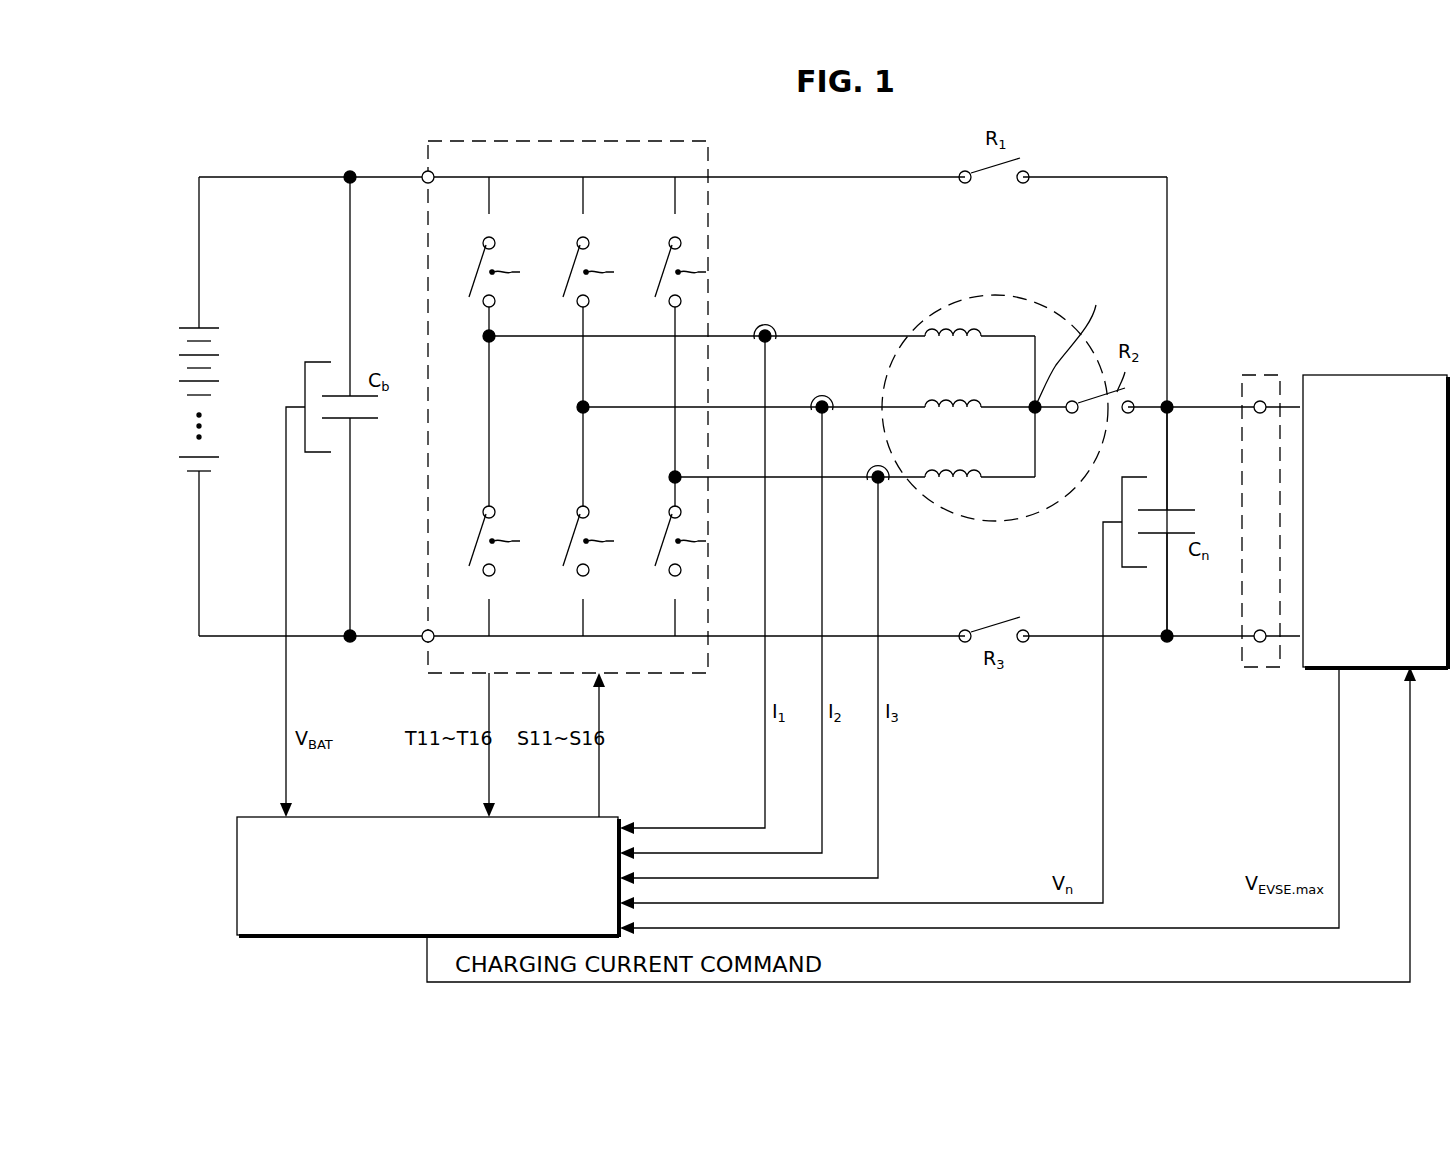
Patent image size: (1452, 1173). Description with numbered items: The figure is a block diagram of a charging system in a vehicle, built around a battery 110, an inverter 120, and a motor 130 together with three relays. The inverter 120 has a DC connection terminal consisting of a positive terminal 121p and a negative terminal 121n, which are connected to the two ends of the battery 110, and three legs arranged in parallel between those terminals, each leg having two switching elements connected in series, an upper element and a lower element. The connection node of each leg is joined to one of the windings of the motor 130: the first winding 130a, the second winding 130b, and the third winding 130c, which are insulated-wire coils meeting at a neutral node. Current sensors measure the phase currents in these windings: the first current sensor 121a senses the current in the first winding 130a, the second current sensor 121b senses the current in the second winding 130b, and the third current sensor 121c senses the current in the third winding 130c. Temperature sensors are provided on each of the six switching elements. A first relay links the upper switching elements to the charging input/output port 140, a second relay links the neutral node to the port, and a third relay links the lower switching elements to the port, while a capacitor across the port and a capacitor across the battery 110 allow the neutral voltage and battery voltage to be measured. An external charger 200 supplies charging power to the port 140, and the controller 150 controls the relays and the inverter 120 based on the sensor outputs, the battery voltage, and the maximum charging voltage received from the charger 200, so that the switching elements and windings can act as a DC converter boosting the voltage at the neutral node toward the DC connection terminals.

The battery 110 is at (193, 425).
The inverter 120 is at (570, 408).
The positive terminal 121p is at (423, 172).
The negative terminal 121n is at (423, 640).
The first current sensor 121a is at (777, 331).
The second current sensor 121b is at (818, 398).
The third current sensor 121c is at (872, 468).
The motor 130 is at (996, 387).
The first winding 130a is at (982, 336).
The second winding 130b is at (966, 402).
The third winding 130c is at (966, 472).
The charging input/output port 140 is at (1266, 375).
The controller 150 is at (375, 817).
The external charger 200 is at (1422, 375).